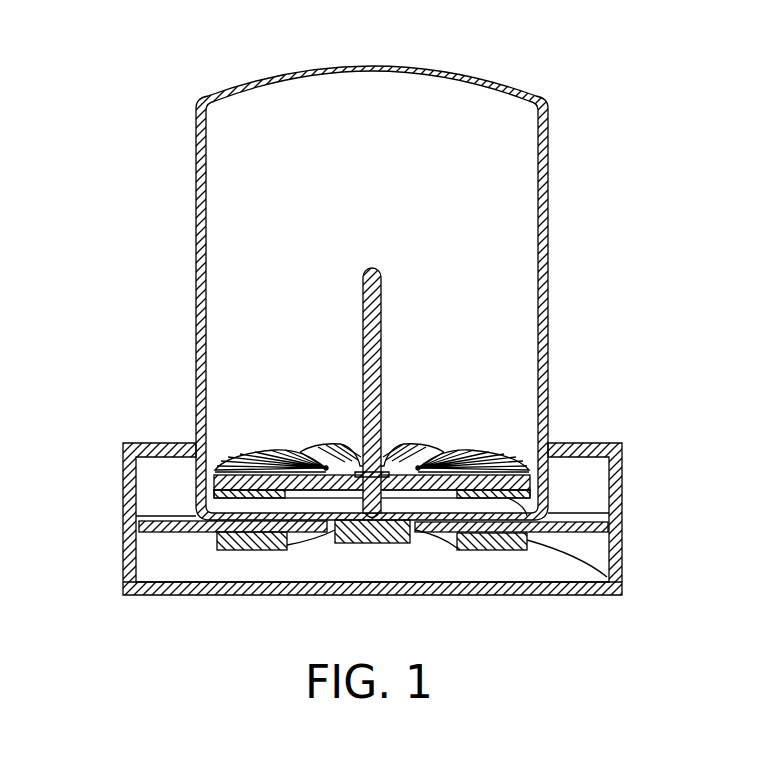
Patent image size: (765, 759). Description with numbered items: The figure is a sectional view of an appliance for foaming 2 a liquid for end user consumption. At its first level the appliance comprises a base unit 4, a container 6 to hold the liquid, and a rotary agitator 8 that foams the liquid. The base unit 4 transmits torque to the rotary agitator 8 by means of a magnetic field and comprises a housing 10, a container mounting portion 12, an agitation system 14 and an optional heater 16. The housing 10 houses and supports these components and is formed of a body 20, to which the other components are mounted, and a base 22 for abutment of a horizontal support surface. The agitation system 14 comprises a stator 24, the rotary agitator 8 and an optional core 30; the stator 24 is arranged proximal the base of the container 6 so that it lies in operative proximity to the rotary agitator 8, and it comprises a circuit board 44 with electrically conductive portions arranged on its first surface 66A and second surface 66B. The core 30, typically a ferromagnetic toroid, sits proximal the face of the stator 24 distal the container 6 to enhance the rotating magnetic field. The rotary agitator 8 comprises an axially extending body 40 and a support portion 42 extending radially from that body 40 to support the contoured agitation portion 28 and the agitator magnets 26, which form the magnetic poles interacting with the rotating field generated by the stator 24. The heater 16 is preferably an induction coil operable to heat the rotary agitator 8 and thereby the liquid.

The appliance for foaming 2 is at (125, 88).
The base unit 4 is at (128, 181).
The container 6 is at (548, 141).
The rotary agitator 8 is at (460, 434).
The housing 10 is at (642, 445).
The container mounting portion 12 is at (553, 468).
The agitation system 14 is at (632, 455).
The heater 16 is at (596, 468).
The body 20 is at (122, 553).
The base 22 is at (468, 596).
The stator 24 is at (219, 540).
The agitator magnets 26 is at (218, 496).
The agitation portion 28 is at (263, 470).
The core 30 is at (247, 550).
The axially extending body 40 is at (381, 302).
The support portion 42 is at (327, 482).
The circuit board 44 is at (553, 550).
The first surface 66A is at (167, 520).
The second surface 66B is at (158, 532).